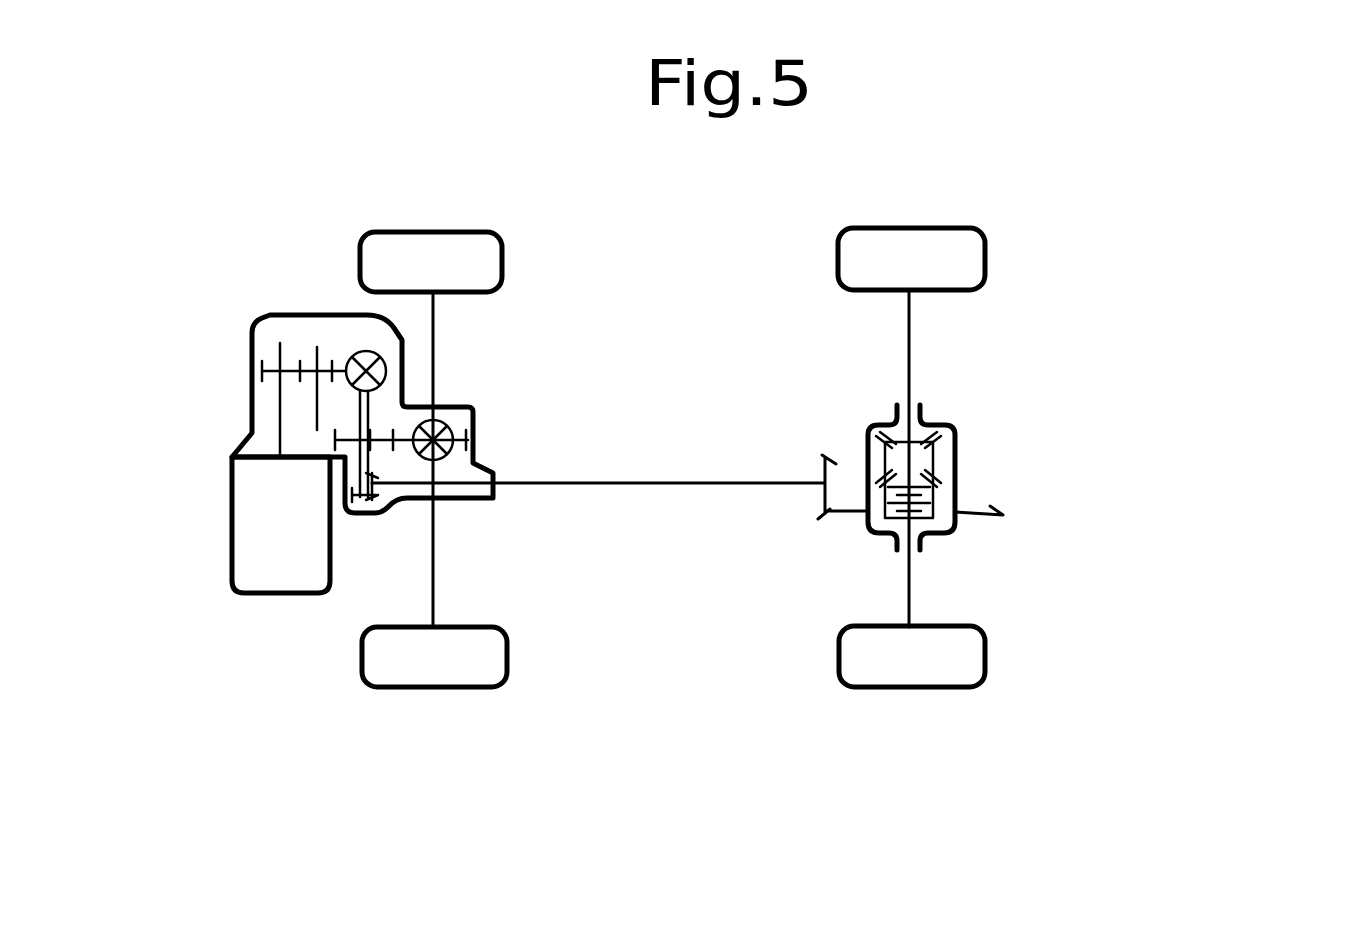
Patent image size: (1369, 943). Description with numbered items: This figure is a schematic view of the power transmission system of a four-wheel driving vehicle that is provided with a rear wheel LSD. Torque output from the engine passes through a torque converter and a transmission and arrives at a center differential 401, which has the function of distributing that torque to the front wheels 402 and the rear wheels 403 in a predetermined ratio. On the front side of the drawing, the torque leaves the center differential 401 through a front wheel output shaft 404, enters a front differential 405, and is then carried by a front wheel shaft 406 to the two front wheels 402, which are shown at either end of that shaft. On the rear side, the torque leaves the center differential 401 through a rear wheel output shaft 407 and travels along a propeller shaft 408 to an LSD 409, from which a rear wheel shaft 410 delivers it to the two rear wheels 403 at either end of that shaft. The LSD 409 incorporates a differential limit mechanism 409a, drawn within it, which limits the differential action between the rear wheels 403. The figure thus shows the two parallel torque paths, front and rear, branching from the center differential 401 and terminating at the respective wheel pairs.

The center differential 401 is at (380, 353).
The front wheels 402 is at (463, 252).
The rear wheels 403 is at (968, 249).
The front wheel output shaft 404 is at (368, 399).
The front differential 405 is at (453, 507).
The front wheel shaft 406 is at (433, 303).
The rear wheel output shaft 407 is at (363, 453).
The propeller shaft 408 is at (552, 483).
The LSD 409 is at (976, 450).
The differential limit mechanism 409a is at (955, 503).
The rear wheel shaft 410 is at (910, 335).